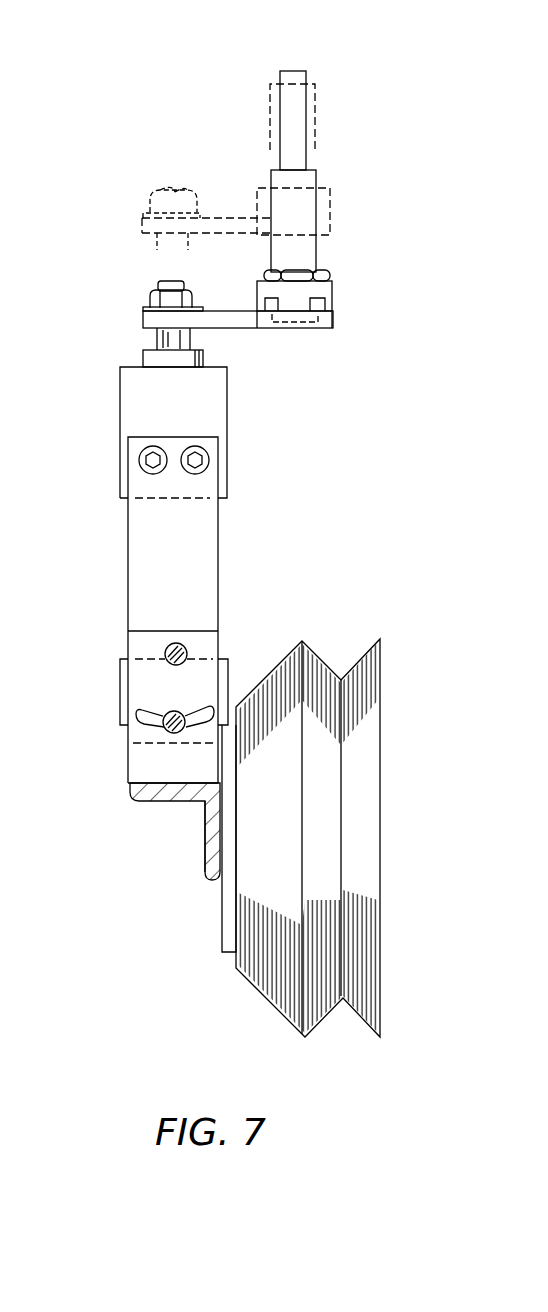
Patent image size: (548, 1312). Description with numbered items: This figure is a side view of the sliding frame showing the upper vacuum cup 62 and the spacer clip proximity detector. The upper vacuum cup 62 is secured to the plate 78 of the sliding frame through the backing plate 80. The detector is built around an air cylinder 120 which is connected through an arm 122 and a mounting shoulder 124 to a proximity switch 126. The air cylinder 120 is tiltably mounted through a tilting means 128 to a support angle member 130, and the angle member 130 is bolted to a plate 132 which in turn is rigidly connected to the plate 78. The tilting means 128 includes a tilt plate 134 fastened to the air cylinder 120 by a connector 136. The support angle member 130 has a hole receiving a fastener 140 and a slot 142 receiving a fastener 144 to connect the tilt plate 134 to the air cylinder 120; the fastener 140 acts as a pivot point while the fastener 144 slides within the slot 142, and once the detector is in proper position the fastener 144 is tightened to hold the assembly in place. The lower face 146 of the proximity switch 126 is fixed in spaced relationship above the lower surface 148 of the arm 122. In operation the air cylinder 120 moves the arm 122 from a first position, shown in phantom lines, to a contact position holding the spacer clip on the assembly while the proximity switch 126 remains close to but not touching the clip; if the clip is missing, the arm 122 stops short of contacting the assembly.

The upper vacuum cup 62 is at (382, 800).
The plate 78 is at (203, 838).
The backing plate 80 is at (220, 897).
The air cylinder 120 is at (228, 455).
The arm 122 is at (333, 318).
The mounting shoulder 124 is at (333, 287).
The proximity switch 126 is at (316, 176).
The tilting means 128 is at (100, 700).
The support angle member 130 is at (128, 758).
The plate 132 is at (170, 801).
The tilt plate 134 is at (128, 556).
The connector 136 is at (140, 460).
The fastener 140 is at (172, 643).
The slot 142 is at (190, 712).
The fastener 144 is at (168, 712).
The lower face 146 is at (300, 322).
The lower surface 148 is at (285, 330).